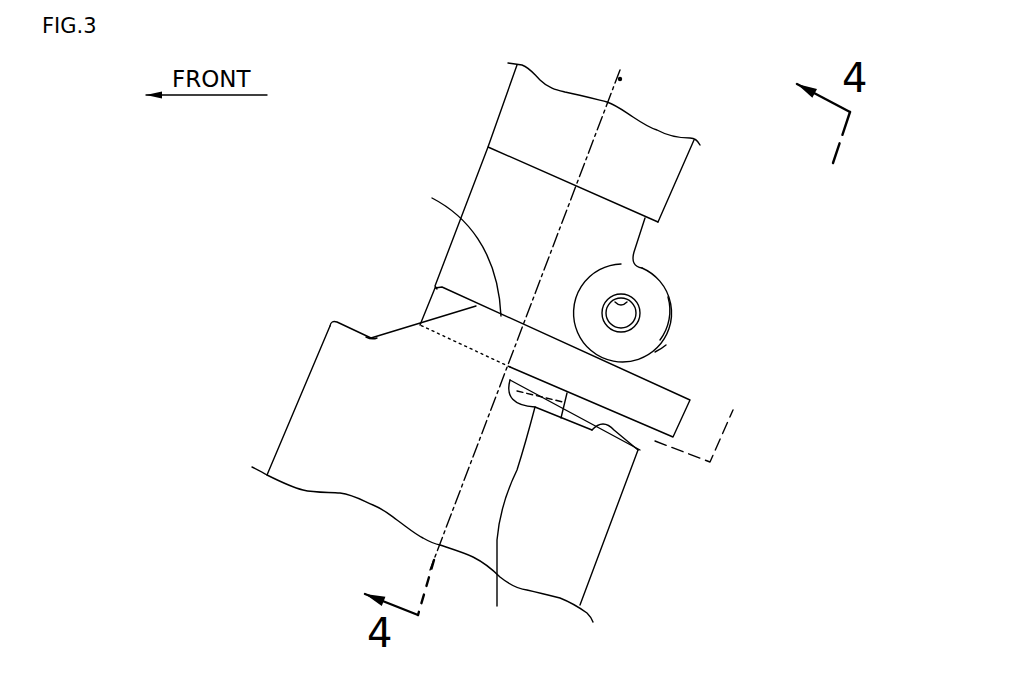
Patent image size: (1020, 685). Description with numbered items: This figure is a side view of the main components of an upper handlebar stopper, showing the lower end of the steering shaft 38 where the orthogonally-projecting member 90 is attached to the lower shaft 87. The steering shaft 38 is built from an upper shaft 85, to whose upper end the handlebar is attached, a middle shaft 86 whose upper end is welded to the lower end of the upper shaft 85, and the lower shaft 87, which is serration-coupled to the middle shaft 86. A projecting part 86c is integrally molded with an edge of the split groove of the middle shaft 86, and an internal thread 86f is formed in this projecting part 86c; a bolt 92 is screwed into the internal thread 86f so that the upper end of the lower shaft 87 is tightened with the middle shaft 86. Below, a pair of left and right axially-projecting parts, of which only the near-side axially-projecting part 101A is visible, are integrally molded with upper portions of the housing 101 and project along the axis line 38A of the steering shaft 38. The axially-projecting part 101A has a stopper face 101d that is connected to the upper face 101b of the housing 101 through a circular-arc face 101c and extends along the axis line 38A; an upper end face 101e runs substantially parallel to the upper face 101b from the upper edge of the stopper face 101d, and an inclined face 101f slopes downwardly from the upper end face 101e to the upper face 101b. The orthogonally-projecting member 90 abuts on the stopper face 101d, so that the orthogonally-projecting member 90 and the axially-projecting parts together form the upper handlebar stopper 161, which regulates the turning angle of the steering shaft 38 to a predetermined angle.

The steering shaft 38 is at (492, 128).
The axis line 38A is at (620, 79).
The upper shaft 85 is at (520, 100).
The middle shaft 86 is at (503, 190).
The projecting part 86c is at (652, 350).
The internal thread 86f is at (631, 298).
The bolt 92 is at (641, 300).
The housing 101 is at (291, 415).
The axially-projecting part 101A is at (441, 314).
The upper face 101b is at (614, 430).
The circular-arc face 101c is at (536, 508).
The stopper face 101d is at (668, 298).
The upper end face 101e is at (438, 249).
The inclined face 101f is at (395, 332).
The upper handlebar stopper 161 is at (685, 329).
The lower shaft 87 is at (543, 408).
The orthogonally-projecting member 90 is at (677, 384).